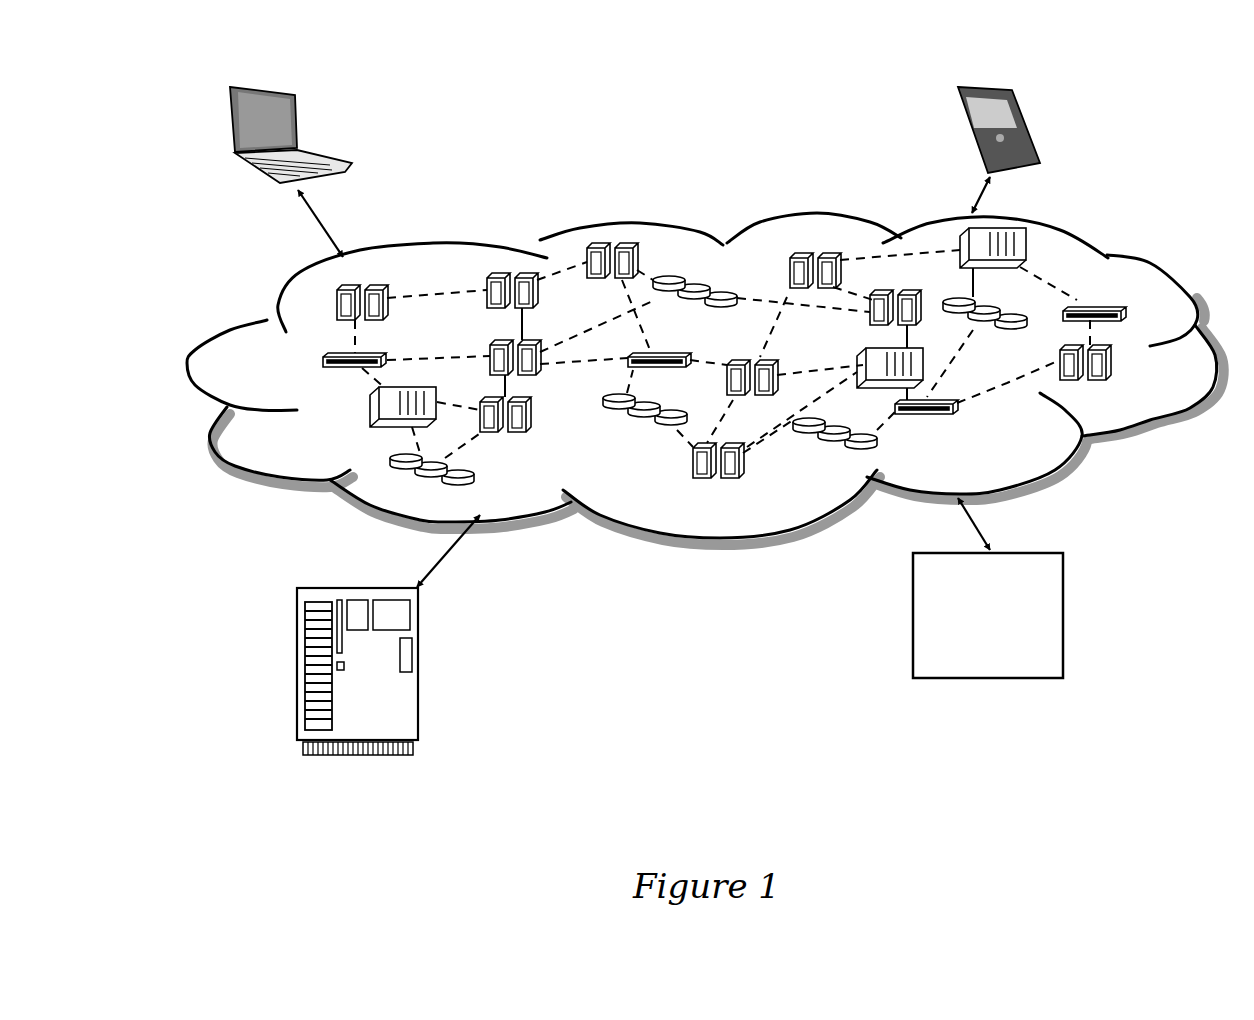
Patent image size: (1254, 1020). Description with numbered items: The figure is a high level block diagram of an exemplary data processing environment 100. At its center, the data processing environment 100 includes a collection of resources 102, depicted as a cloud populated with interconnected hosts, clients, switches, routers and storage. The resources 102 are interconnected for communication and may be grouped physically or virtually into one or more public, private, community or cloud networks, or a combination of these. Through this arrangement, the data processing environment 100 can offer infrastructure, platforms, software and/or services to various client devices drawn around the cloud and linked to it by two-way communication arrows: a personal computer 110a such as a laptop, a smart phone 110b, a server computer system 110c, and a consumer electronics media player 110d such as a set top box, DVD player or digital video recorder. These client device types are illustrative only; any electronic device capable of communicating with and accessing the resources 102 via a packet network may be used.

The data processing environment 100 is at (742, 130).
The collection of resources 102 is at (678, 533).
The personal computer 110a is at (330, 157).
The smart phone 110b is at (1007, 83).
The server computer system 110c is at (418, 703).
The media player 110d is at (988, 615).